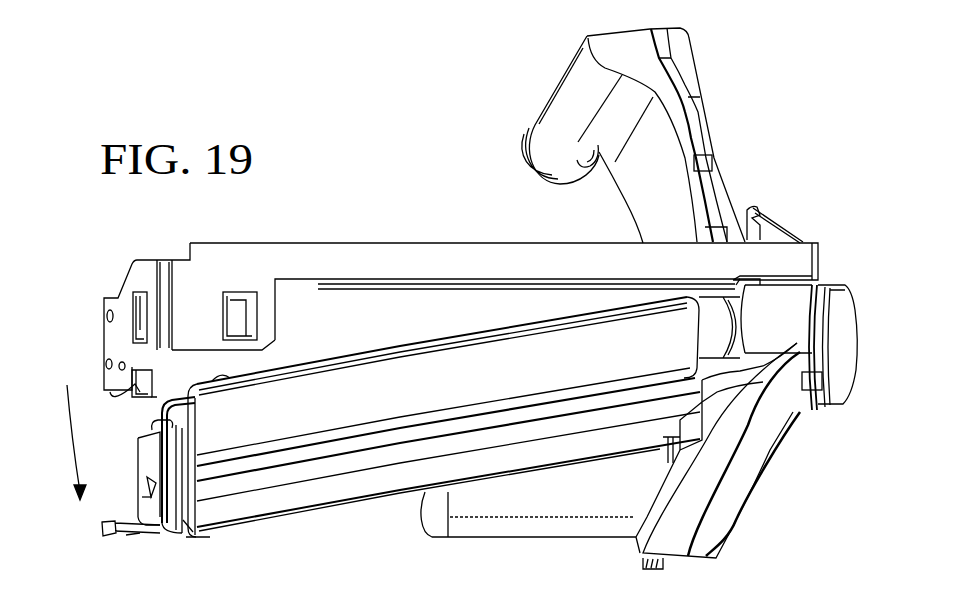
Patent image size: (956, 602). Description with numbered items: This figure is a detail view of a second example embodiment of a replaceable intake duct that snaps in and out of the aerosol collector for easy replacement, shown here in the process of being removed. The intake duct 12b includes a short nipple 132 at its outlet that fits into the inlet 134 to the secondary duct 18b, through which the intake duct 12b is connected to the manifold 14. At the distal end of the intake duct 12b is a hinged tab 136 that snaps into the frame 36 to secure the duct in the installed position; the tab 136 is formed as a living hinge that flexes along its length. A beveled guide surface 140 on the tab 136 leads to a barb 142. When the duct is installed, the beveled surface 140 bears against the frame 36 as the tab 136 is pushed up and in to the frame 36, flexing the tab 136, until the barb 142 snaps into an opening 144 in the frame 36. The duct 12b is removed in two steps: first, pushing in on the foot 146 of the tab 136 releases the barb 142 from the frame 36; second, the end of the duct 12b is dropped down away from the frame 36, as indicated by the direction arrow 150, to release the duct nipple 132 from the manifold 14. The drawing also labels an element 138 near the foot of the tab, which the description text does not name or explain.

The frame 36 is at (195, 258).
The intake duct 12b is at (355, 360).
The nipple 132 is at (702, 325).
The inlet 134 is at (740, 287).
The secondary duct 18b is at (780, 300).
The manifold 14 is at (846, 408).
The opening 144 is at (128, 385).
The direction arrow 150 is at (68, 448).
The beveled guide surface 140 is at (148, 482).
The barb 142 is at (147, 500).
The foot 146 is at (100, 532).
The hinged tab 136 is at (130, 538).
The retainer 138 is at (186, 537).